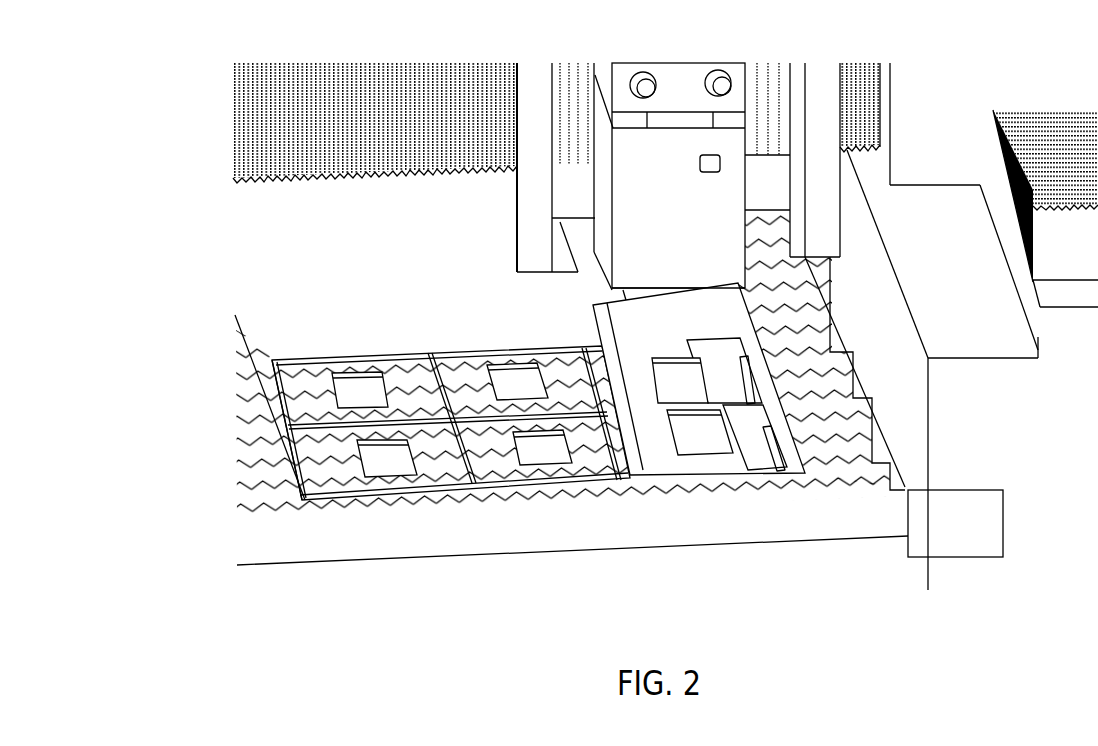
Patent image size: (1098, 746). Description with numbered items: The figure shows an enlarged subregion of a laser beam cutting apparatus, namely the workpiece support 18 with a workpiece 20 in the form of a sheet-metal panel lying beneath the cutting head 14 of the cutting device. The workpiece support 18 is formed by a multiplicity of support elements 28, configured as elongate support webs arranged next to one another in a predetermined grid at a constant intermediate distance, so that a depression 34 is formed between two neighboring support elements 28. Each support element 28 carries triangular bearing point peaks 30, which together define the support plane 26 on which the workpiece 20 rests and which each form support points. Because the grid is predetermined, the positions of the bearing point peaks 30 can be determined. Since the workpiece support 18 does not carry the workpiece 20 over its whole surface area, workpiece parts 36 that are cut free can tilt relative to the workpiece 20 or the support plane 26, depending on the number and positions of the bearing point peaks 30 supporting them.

The cutting head 14 is at (713, 205).
The workpiece support 18 is at (288, 530).
The workpiece 20 is at (330, 503).
The support plane 26 is at (260, 477).
The support elements 28 is at (863, 460).
The bearing point peaks 30 is at (250, 422).
The depression 34 is at (428, 385).
The workpiece parts 36 is at (637, 380).